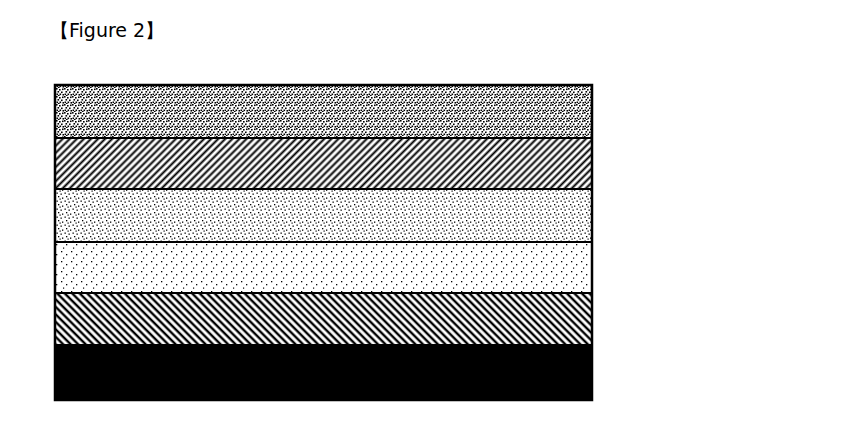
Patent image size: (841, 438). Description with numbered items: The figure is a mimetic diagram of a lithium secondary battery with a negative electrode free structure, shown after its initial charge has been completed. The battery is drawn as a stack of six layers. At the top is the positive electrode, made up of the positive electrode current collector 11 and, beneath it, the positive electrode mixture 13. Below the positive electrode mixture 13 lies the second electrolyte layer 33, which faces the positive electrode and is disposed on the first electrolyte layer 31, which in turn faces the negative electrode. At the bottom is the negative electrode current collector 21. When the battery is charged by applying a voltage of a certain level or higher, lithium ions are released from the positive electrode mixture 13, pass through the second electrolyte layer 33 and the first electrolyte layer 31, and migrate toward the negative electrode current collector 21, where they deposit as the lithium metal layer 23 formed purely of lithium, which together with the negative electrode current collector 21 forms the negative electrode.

The positive electrode current collector 11 is at (592, 111).
The positive electrode mixture 13 is at (592, 163).
The second electrolyte layer 33 is at (592, 215).
The first electrolyte layer 31 is at (592, 267).
The lithium metal layer 23 is at (592, 320).
The negative electrode current collector 21 is at (592, 371).